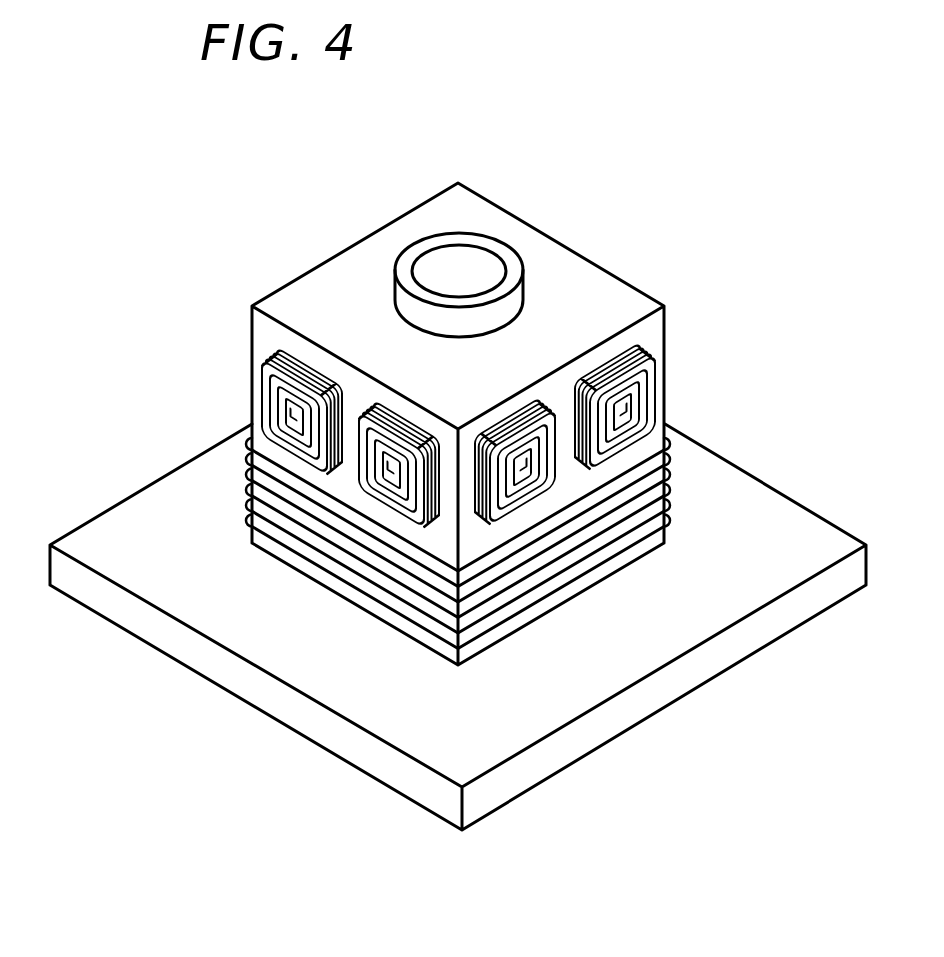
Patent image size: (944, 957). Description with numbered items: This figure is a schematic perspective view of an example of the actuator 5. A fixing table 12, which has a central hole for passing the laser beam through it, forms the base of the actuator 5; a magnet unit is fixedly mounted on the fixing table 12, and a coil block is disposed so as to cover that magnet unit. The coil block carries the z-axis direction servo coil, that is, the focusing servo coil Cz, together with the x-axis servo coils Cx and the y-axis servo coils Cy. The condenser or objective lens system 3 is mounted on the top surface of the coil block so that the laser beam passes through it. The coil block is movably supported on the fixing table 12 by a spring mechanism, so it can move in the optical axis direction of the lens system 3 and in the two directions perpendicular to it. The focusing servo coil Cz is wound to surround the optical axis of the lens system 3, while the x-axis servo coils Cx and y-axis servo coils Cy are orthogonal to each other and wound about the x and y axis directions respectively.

The actuator 5 is at (197, 202).
The objective lens system 3 is at (473, 234).
The x-axis servo coils Cx is at (395, 410).
The y-axis servo coils Cy is at (615, 357).
The focusing servo coil Cz is at (676, 452).
The fixing table 12 is at (625, 718).